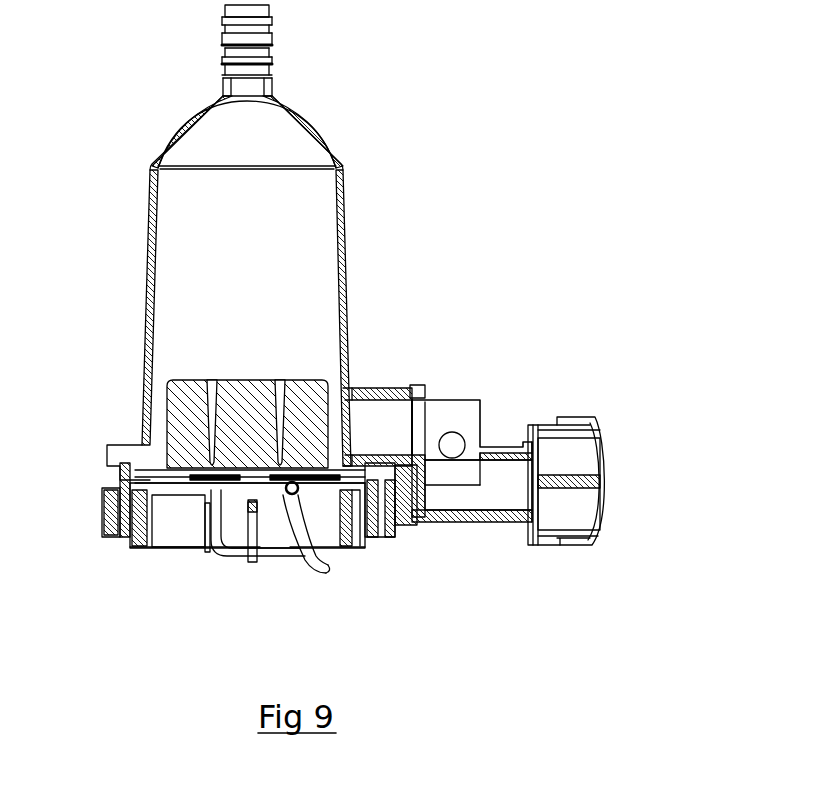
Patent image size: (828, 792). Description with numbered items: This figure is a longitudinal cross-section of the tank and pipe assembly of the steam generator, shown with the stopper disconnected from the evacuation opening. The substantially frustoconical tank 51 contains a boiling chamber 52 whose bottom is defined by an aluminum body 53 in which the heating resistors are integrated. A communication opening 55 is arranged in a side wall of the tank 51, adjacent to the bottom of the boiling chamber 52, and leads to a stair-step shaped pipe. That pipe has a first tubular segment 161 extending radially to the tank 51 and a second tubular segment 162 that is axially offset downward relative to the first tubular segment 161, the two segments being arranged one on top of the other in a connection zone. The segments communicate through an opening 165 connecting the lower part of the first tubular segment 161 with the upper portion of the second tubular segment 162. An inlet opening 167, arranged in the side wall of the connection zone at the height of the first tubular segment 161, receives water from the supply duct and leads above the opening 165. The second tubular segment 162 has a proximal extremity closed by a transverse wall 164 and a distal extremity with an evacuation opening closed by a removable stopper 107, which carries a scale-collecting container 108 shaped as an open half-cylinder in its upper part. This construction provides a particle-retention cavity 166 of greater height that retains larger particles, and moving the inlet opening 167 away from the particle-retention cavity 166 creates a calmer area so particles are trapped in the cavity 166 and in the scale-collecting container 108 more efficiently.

The tank 51 is at (145, 313).
The boiling chamber 52 is at (247, 228).
The aluminum body 53 is at (182, 440).
The communication opening 55 is at (351, 400).
The removable stopper 107 is at (603, 520).
The scale-collecting container 108 is at (497, 510).
The first tubular segment 161 is at (425, 395).
The second tubular segment 162 is at (468, 525).
The transverse wall 164 is at (413, 517).
The opening 165 is at (473, 457).
The particle-retention cavity 166 is at (445, 500).
The inlet opening 167 is at (450, 432).